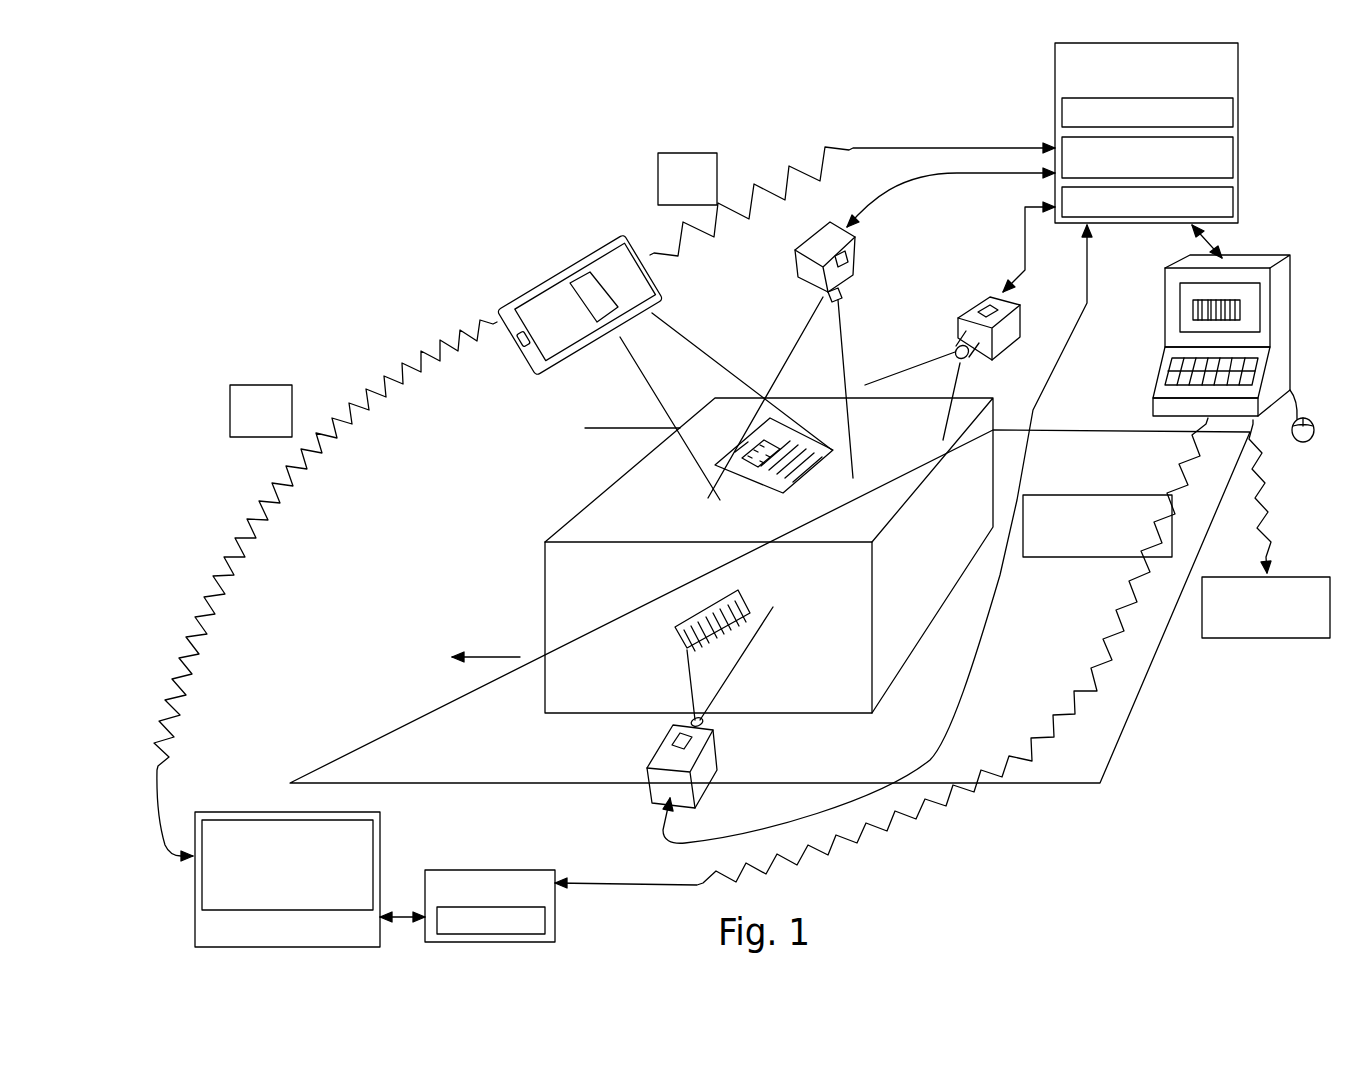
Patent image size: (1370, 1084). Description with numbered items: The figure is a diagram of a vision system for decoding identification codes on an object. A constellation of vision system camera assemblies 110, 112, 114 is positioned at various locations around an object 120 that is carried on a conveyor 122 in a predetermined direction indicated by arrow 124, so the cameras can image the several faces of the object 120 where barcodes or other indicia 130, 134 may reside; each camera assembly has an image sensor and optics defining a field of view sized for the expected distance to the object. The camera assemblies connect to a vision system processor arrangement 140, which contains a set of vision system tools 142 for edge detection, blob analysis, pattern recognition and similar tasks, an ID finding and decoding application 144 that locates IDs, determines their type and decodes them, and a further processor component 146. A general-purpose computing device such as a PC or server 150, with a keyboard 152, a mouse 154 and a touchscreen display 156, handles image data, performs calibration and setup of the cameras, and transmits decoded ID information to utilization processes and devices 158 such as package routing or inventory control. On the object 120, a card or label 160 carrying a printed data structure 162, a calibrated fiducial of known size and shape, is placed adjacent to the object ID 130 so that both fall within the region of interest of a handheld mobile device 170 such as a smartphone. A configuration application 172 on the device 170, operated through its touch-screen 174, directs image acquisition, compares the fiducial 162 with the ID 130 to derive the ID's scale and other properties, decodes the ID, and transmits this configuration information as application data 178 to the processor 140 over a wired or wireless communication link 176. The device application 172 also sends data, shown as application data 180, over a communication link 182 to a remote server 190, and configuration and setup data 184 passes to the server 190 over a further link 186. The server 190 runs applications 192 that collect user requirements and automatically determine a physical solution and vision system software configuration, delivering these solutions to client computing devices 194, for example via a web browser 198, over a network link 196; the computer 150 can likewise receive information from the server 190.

The vision system camera assembly 110 is at (855, 250).
The vision system camera assembly 112 is at (1010, 345).
The vision system camera assembly 114 is at (650, 796).
The object 120 is at (895, 628).
The conveyor 122 is at (1105, 715).
The arrow 124 is at (480, 668).
The object ID 130 is at (774, 472).
The indicia 134 is at (720, 600).
The vision system processor arrangement 140 is at (1185, 133).
The vision system tools 142 is at (1224, 103).
The ID finding and decoding application 144 is at (1228, 147).
The configuration process 146 is at (1230, 197).
The PC or server 150 is at (1248, 327).
The keyboard 152 is at (1255, 372).
The mouse 154 is at (1312, 418).
The touchscreen display 156 is at (1247, 312).
The utilization processes and/or devices 158 is at (1248, 637).
The card, label or other applied element 160 is at (733, 447).
The printed data structure 162 is at (750, 460).
The handheld mobile device 170 is at (639, 366).
The mobile device configuration application 172 is at (567, 287).
The touch-screen 174 is at (542, 300).
The communication link 176 is at (890, 148).
The application data 178 is at (687, 152).
The app data 180 is at (262, 383).
The communication link to remote server 182 is at (268, 510).
The configuration and setup data 184 is at (1137, 495).
The wired or wireless link 186 is at (881, 653).
The remote server 190 is at (327, 873).
The applications 192 is at (370, 832).
The clients 194 is at (524, 906).
The network link 196 is at (403, 922).
The web browser 198 is at (548, 913).